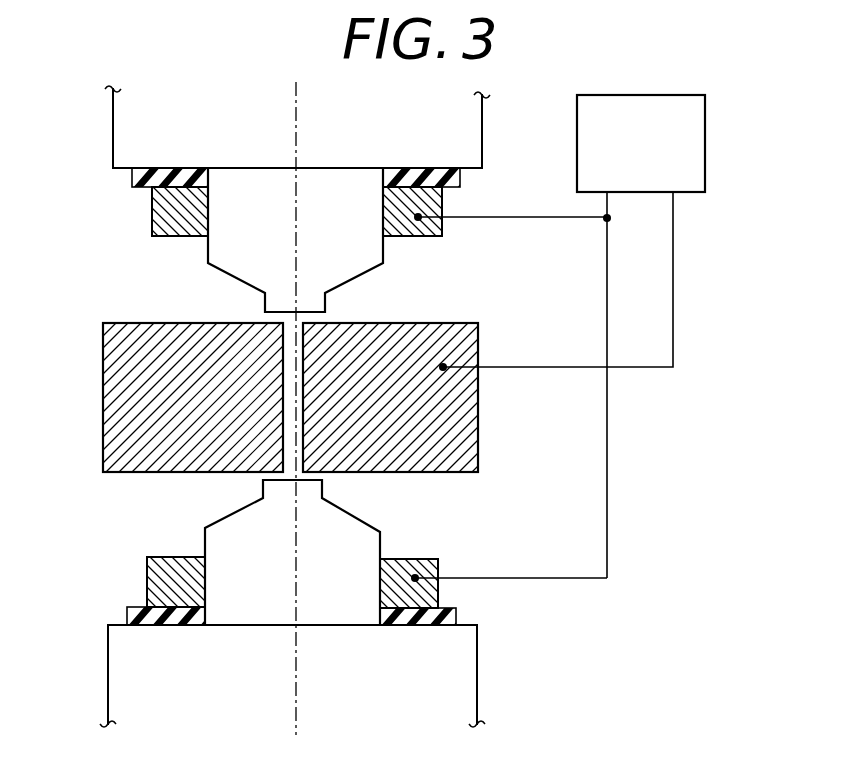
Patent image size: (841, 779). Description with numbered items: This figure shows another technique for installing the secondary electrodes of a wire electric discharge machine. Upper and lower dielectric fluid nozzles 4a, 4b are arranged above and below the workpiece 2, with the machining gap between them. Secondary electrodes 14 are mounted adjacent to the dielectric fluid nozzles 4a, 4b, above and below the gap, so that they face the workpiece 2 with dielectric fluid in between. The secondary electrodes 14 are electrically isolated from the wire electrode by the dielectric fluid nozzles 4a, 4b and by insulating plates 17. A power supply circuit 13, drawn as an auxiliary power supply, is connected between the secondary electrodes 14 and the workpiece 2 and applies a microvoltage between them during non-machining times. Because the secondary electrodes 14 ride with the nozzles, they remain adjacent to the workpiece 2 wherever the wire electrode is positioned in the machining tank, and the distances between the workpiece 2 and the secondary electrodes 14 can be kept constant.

The workpiece 2 is at (103, 443).
The upper dielectric fluid nozzle 4a is at (228, 276).
The lower dielectric fluid nozzle 4b is at (232, 516).
The power supply circuit 13 is at (705, 174).
The secondary electrode 14 is at (152, 222).
The insulating plate 17 is at (132, 178).